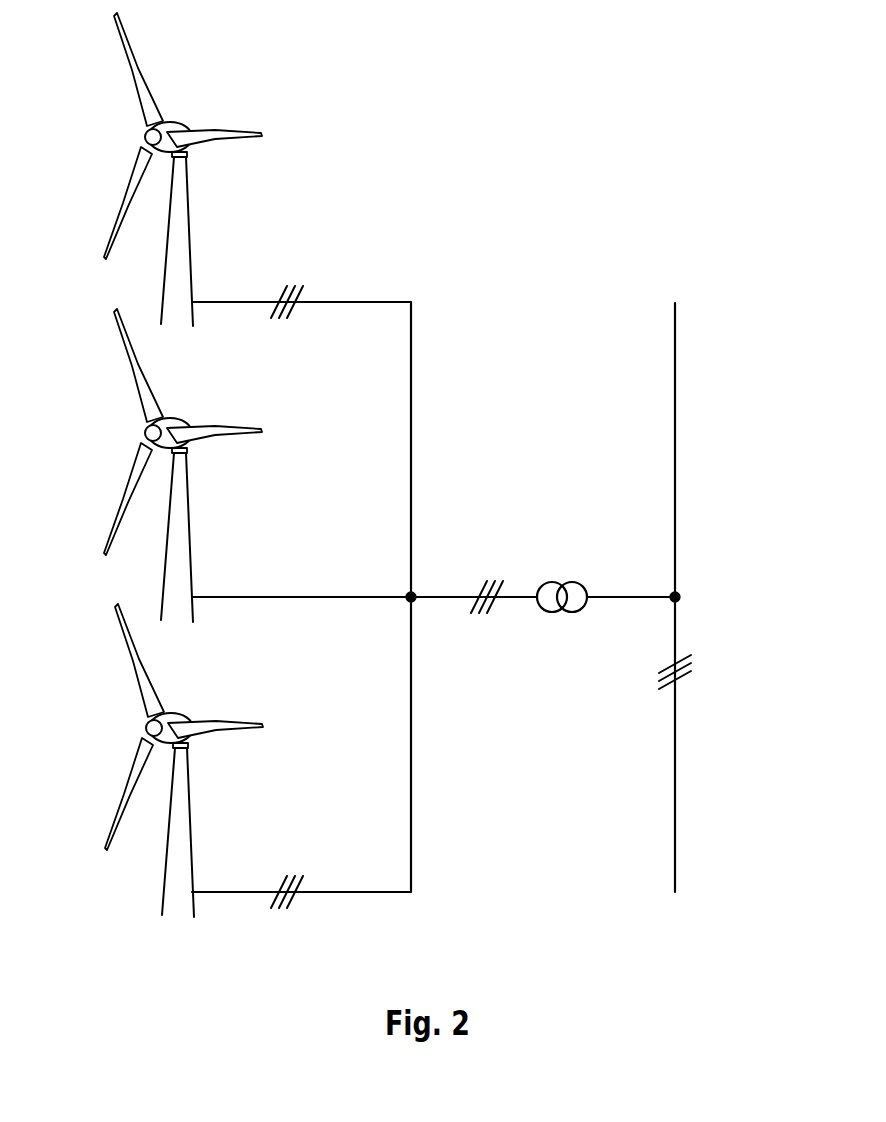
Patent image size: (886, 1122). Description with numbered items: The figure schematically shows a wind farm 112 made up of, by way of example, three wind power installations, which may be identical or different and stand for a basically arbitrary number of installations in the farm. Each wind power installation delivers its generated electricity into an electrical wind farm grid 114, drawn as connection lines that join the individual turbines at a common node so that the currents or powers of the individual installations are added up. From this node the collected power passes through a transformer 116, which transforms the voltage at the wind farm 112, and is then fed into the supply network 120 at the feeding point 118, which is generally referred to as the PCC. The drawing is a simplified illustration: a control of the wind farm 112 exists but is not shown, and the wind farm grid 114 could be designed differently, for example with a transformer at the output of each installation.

The wind farm 112 is at (483, 138).
The electrical wind farm grid 114 is at (433, 597).
The transformer 116 is at (563, 574).
The feeding point 118 is at (685, 582).
The supply network 120 is at (678, 330).